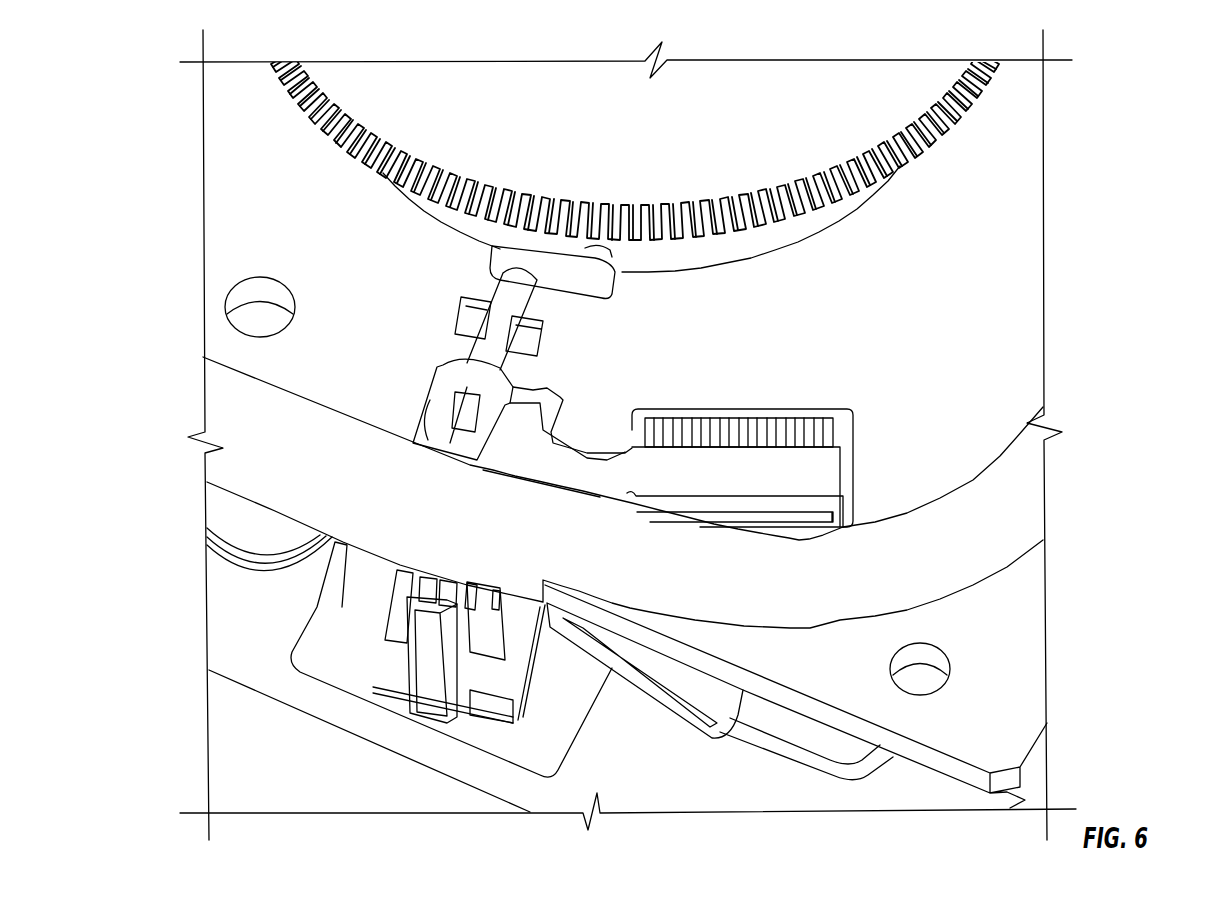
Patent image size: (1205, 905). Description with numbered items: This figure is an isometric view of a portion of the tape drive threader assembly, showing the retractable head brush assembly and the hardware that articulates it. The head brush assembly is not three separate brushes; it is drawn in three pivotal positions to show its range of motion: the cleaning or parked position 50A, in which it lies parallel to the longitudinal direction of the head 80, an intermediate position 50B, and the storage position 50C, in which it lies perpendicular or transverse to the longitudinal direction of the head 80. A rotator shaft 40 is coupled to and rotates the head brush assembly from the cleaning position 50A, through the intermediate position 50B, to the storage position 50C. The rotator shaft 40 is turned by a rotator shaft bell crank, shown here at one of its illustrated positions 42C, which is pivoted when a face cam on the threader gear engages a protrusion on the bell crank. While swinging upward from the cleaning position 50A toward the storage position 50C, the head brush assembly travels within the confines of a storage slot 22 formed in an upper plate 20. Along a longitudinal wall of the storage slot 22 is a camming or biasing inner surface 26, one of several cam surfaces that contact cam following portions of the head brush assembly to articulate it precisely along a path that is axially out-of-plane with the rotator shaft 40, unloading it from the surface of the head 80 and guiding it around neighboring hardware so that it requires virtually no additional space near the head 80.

The upper plate 20 is at (1030, 648).
The storage slot 22 is at (858, 447).
The inner surface 26 is at (552, 392).
The rotator shaft 40 is at (442, 372).
The rotator shaft bell crank 42C is at (630, 276).
The head brush assembly 50A is at (427, 703).
The head brush assembly 50B is at (685, 705).
The head brush assembly 50C is at (797, 460).
The head 80 is at (497, 653).